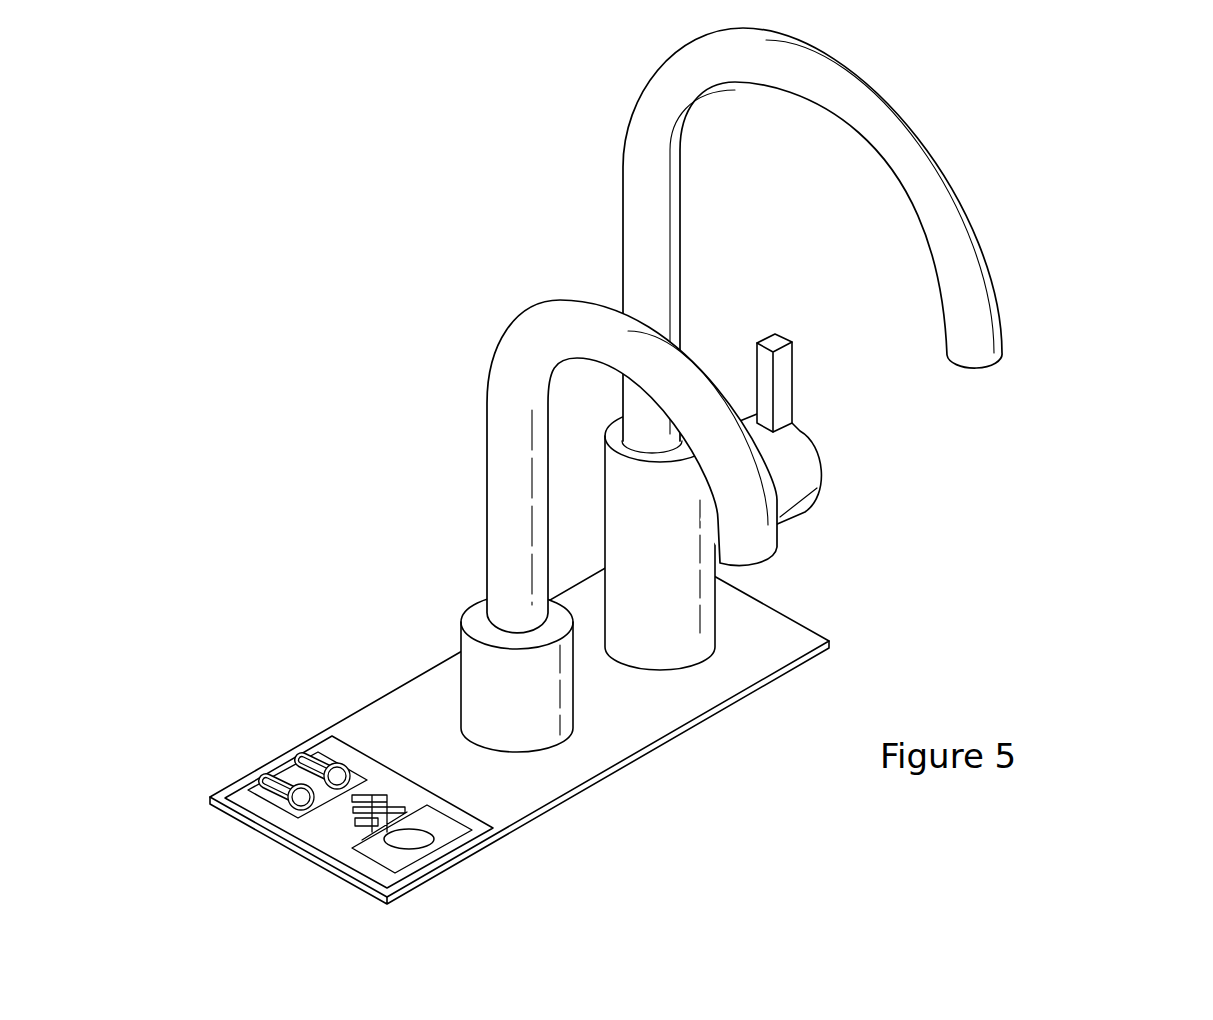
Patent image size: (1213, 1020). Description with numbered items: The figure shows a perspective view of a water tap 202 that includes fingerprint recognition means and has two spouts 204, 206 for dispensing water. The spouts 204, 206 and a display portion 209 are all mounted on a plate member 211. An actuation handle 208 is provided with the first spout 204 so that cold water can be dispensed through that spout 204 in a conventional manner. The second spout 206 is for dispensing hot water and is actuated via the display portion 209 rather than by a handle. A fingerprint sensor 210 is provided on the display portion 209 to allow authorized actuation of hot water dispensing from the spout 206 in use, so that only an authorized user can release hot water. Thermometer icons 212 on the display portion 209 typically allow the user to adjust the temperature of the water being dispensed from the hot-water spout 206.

The water tap 202 is at (1055, 498).
The spout 204 is at (937, 198).
The spout 206 is at (567, 322).
The actuation handle 208 is at (831, 462).
The display portion 209 is at (330, 766).
The fingerprint sensor 210 is at (430, 847).
The plate member 211 is at (659, 717).
The thermometer icons 212 is at (268, 795).